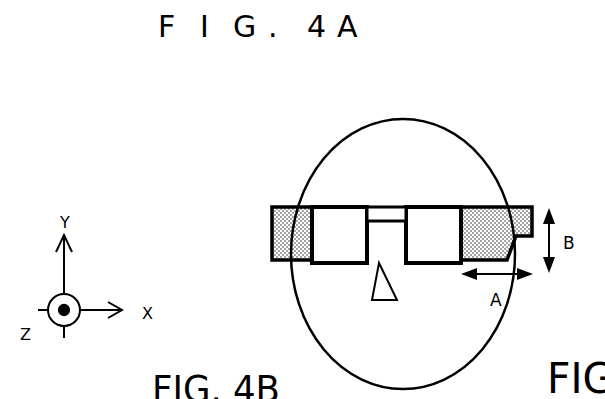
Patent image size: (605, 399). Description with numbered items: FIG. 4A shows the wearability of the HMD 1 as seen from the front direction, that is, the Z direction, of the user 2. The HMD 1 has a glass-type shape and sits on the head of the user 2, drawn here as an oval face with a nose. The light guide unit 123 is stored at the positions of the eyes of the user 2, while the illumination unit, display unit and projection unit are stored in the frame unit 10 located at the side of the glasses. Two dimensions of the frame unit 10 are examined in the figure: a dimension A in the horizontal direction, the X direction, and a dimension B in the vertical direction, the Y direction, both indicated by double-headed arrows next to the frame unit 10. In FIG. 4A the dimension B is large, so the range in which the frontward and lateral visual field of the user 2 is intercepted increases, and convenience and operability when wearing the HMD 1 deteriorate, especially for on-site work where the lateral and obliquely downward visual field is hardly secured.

The HMD 1 is at (410, 151).
The user 2 is at (362, 140).
The frame unit 10 is at (495, 218).
The light guide unit 123 is at (437, 218).